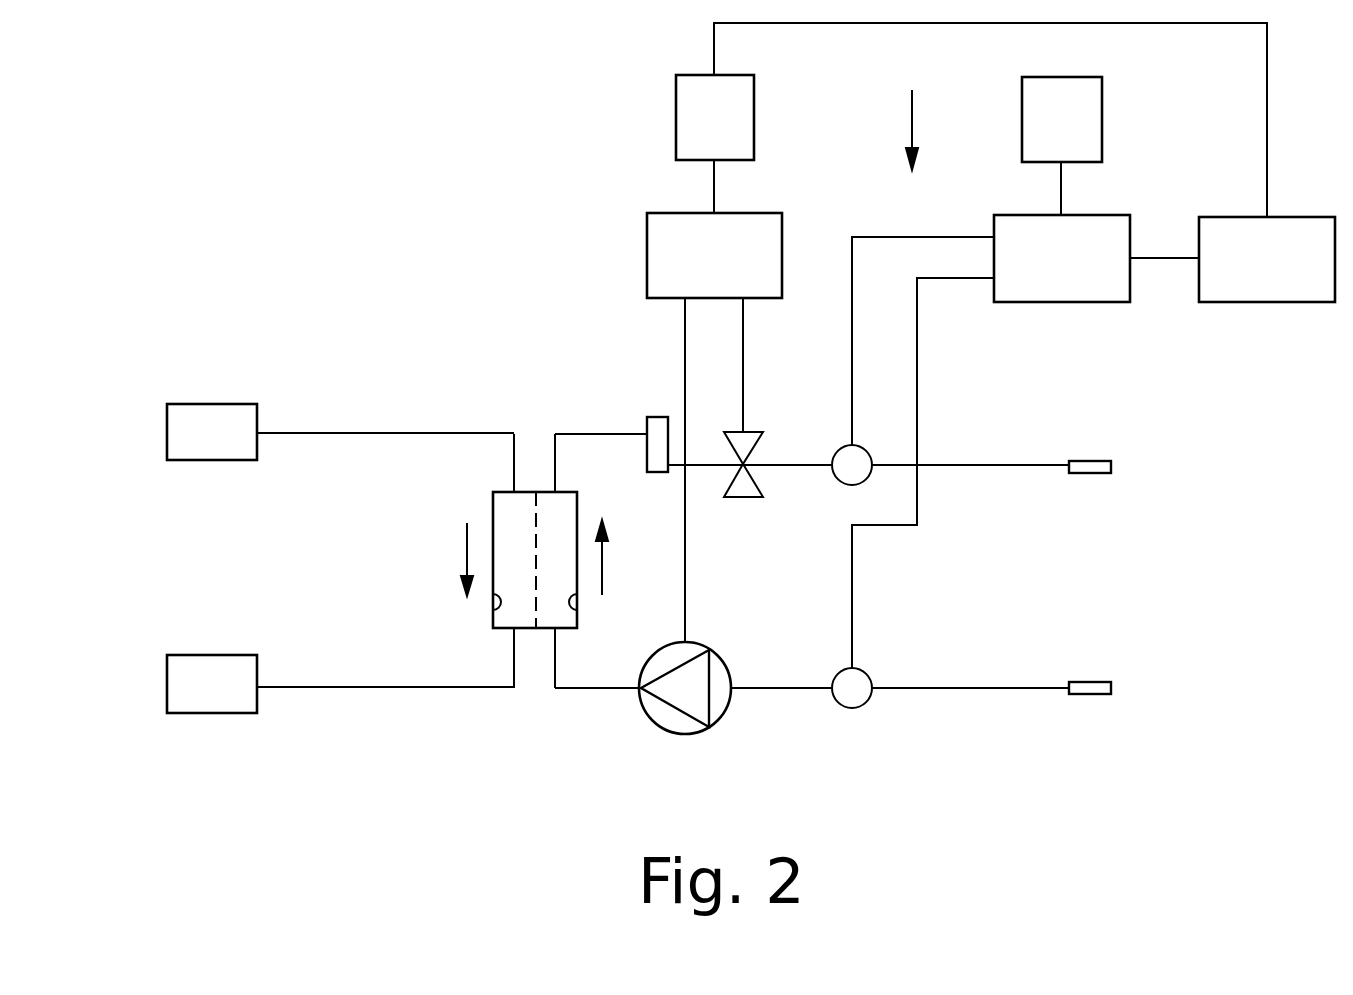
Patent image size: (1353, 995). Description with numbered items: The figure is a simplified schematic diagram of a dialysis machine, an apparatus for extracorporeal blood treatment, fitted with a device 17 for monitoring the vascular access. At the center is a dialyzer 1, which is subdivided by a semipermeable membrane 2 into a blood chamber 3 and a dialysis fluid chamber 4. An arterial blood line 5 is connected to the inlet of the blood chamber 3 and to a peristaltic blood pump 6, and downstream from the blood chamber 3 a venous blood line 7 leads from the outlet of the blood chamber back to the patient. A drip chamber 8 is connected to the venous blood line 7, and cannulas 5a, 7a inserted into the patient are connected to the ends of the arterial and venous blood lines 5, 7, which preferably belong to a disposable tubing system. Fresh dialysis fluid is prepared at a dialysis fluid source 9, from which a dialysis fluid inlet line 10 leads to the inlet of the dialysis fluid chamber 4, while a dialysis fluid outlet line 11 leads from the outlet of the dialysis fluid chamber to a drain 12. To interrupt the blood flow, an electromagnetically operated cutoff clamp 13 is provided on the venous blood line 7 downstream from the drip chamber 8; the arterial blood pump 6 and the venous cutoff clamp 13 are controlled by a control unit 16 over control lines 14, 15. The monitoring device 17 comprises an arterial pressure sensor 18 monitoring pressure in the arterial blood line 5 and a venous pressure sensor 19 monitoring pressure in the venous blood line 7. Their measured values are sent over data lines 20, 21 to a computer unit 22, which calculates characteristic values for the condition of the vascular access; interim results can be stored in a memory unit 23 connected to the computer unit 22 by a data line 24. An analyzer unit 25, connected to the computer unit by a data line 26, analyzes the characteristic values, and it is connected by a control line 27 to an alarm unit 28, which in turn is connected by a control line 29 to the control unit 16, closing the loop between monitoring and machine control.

The dialyzer 1 is at (586, 499).
The semipermeable membrane 2 is at (533, 508).
The blood chamber 3 is at (577, 612).
The dialysis fluid chamber 4 is at (493, 609).
The arterial blood line 5 is at (975, 688).
The cannula 5a is at (1097, 688).
The peristaltic blood pump 6 is at (718, 718).
The venous blood line 7 is at (1009, 465).
The cannula 7a is at (1097, 465).
The drip chamber 8 is at (654, 417).
The dialysis fluid source 9 is at (192, 404).
The dialysis fluid inlet line 10 is at (395, 433).
The dialysis fluid outlet line 11 is at (375, 687).
The drain 12 is at (193, 655).
The cutoff clamp 13 is at (757, 428).
The control line 14 is at (685, 325).
The control line 15 is at (743, 358).
The control unit 16 is at (782, 248).
The device for monitoring the vascular access 17 is at (916, 114).
The arterial pressure sensor 18 is at (863, 705).
The venous pressure sensor 19 is at (838, 483).
The data line 20 is at (852, 575).
The data line 21 is at (852, 325).
The computer unit 22 is at (1020, 302).
The memory unit 23 is at (1102, 97).
The data line 24 is at (1061, 190).
The analyzer unit 25 is at (1300, 302).
The data line 26 is at (1165, 260).
The control line 27 is at (1267, 158).
The alarm unit 28 is at (754, 98).
The control line 29 is at (714, 183).